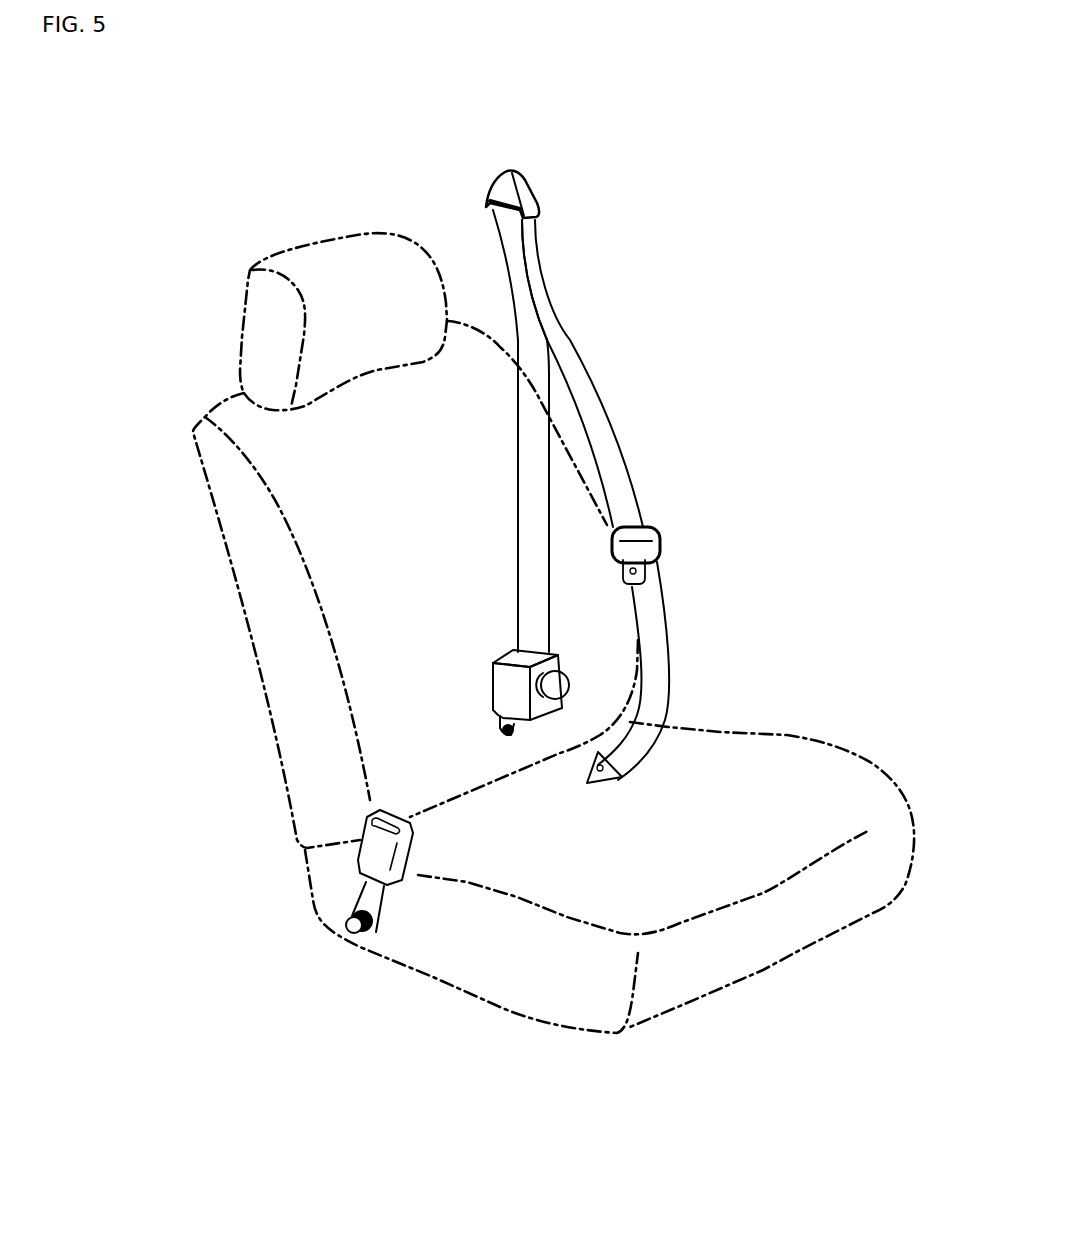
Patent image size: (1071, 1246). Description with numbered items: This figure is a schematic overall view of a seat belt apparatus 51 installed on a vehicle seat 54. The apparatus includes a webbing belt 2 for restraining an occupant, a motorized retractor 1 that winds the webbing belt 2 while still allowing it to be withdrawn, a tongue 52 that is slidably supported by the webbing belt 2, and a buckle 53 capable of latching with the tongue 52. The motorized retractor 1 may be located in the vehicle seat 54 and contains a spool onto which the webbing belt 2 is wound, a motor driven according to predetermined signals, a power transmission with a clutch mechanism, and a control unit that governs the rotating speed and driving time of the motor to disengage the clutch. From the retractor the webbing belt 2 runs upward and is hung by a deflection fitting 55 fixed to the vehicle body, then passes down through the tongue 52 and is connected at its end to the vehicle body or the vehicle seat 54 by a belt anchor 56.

The motorized retractor 1 is at (510, 690).
The webbing belt 2 is at (562, 335).
The seat belt apparatus 51 is at (742, 345).
The tongue 52 is at (635, 550).
The buckle 53 is at (378, 850).
The vehicle seat 54 is at (352, 582).
The deflection fitting 55 is at (500, 190).
The belt anchor 56 is at (598, 778).